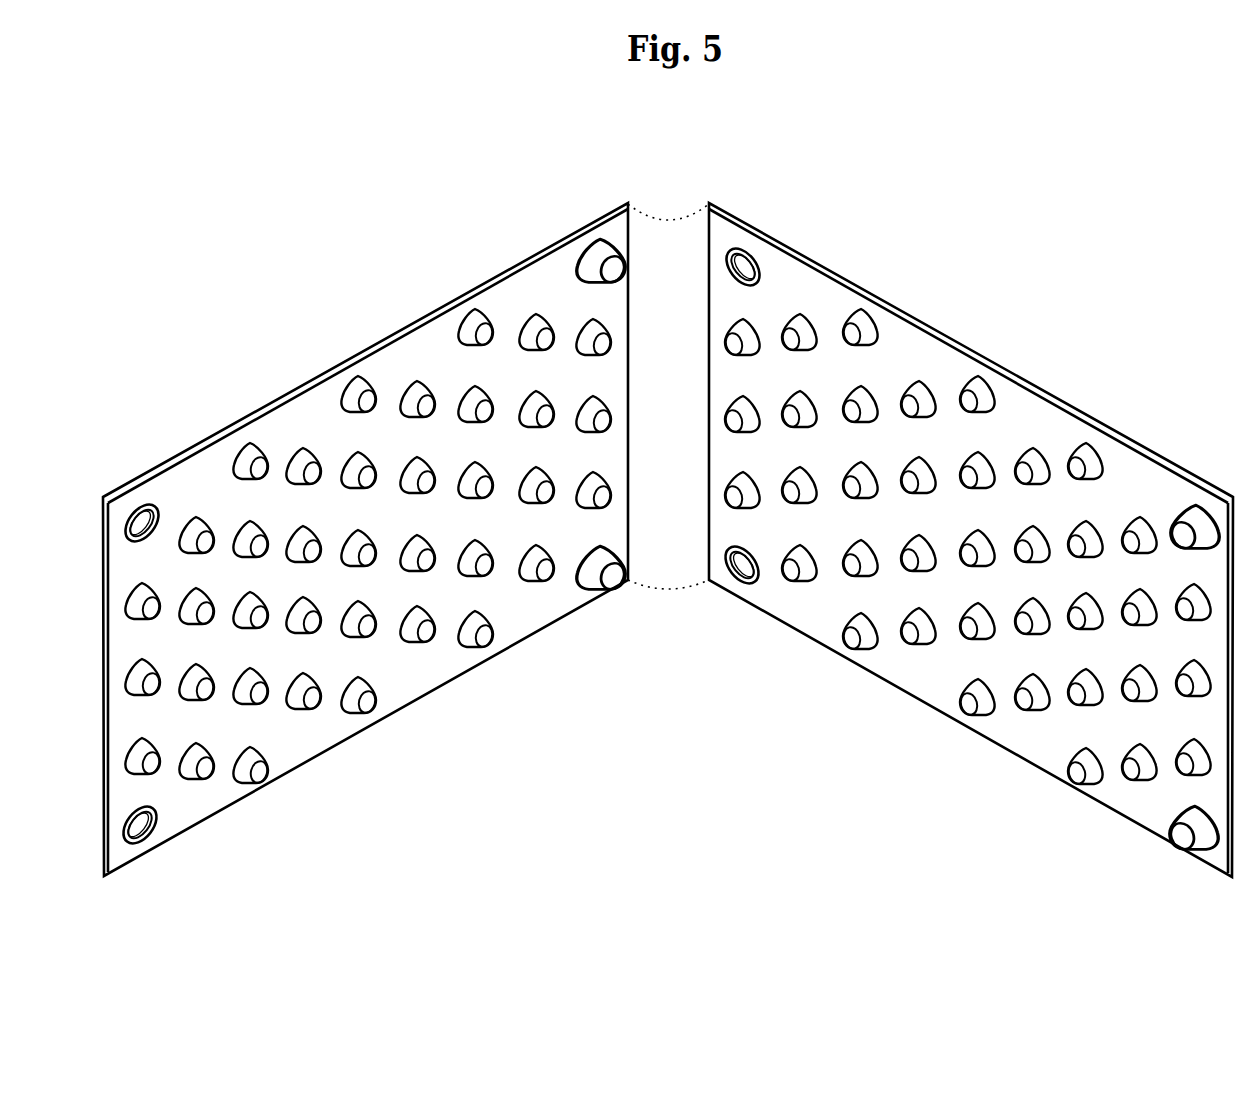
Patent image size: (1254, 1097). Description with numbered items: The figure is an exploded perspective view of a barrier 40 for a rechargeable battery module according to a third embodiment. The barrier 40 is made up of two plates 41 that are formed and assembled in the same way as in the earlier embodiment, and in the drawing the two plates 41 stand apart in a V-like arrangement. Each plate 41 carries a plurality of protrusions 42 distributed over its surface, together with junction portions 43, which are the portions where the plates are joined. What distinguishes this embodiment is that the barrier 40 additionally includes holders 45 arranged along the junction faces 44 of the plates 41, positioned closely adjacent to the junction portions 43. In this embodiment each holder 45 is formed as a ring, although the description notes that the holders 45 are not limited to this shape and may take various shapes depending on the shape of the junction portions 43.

The barrier 40 is at (683, 139).
The plate 41 is at (412, 335).
The protrusion 42 is at (536, 318).
The junction portion 43 is at (596, 255).
The junction face 44 is at (162, 508).
The holder 45 is at (140, 505).